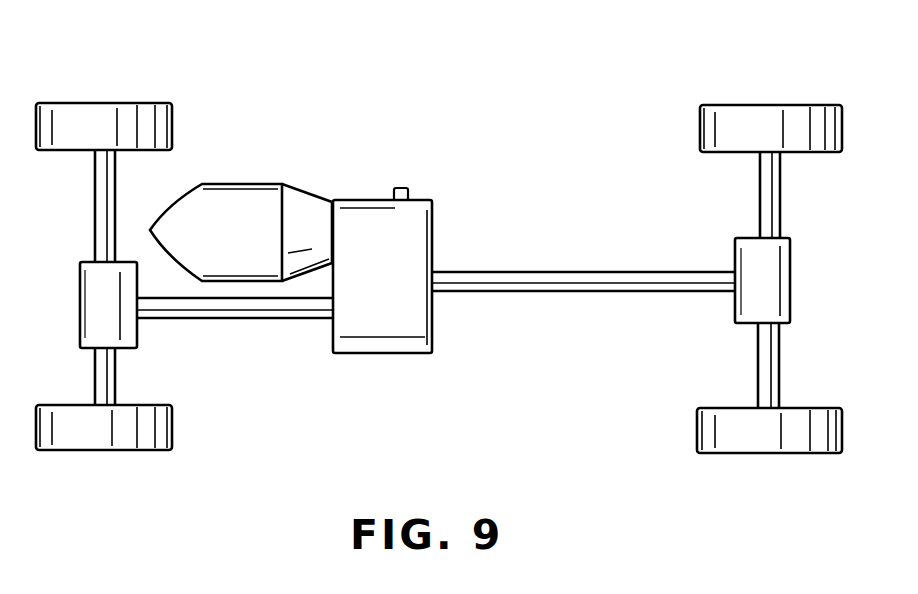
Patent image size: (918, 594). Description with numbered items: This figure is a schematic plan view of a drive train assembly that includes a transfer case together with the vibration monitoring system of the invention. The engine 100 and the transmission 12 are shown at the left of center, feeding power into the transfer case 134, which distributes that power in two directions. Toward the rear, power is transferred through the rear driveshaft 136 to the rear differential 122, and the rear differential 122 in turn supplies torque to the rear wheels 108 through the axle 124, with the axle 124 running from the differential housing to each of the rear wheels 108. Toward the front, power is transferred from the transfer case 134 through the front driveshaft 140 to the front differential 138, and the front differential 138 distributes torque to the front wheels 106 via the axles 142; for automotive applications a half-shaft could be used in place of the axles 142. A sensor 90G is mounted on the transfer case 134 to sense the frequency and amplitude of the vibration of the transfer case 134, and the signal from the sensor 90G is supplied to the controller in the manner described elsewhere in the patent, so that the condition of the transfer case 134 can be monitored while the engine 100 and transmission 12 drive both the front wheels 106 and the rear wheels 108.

The transmission 12 is at (309, 191).
The sensor 90G is at (404, 187).
The engine 100 is at (233, 182).
The front wheels 106 is at (134, 104).
The rear wheels 108 is at (703, 118).
The rear differential 122 is at (792, 291).
The axle 124 is at (782, 205).
The transfer case 134 is at (387, 354).
The rear driveshaft 136 is at (551, 272).
The front differential 138 is at (132, 330).
The front driveshaft 140 is at (258, 319).
The axles 142 is at (96, 210).